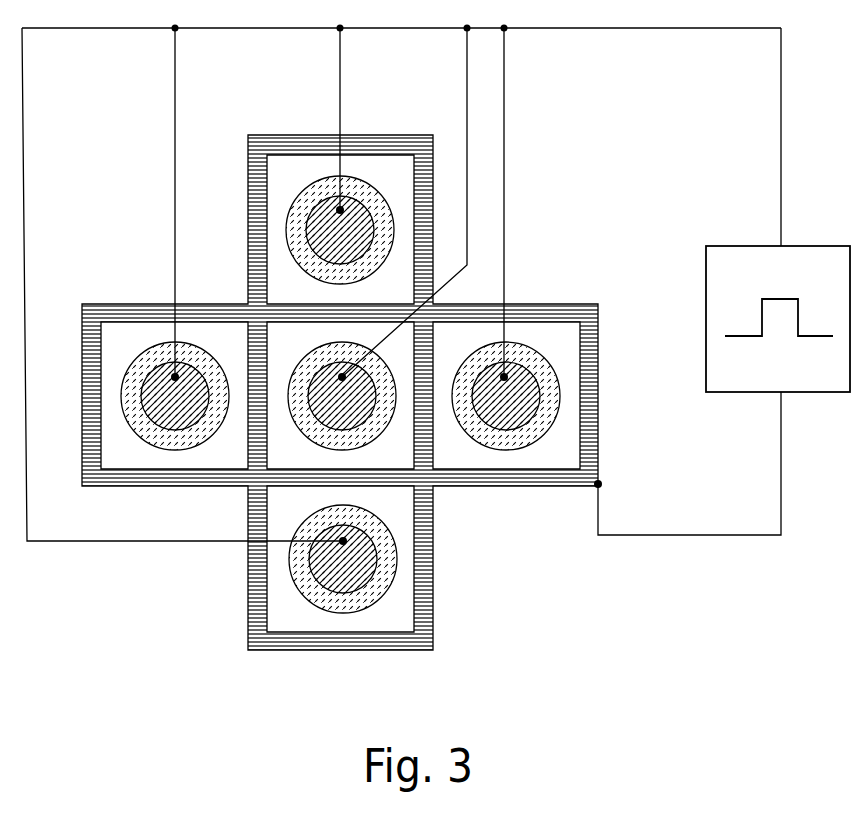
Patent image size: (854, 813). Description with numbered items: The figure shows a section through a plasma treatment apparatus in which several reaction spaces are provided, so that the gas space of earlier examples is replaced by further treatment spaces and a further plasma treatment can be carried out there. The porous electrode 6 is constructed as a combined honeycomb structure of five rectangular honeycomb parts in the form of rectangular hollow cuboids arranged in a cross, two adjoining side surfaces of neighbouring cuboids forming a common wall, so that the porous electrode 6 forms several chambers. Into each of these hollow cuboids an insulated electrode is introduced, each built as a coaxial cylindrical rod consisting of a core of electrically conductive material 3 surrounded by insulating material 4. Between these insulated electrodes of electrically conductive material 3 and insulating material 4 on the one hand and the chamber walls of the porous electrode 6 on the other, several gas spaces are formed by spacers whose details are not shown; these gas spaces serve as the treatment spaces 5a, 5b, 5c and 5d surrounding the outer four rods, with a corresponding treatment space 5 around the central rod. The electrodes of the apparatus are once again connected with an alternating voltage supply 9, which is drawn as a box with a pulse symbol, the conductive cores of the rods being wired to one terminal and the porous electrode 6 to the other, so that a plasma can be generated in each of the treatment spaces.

The electrically conductive material 3 is at (345, 558).
The insulating material 4 is at (382, 532).
The treatment space 5 is at (300, 343).
The treatment space 5a is at (405, 573).
The treatment space 5b is at (128, 343).
The treatment space 5c is at (297, 176).
The treatment space 5d is at (553, 342).
The porous electrode 6 is at (532, 486).
The alternating voltage supply 9 is at (818, 280).